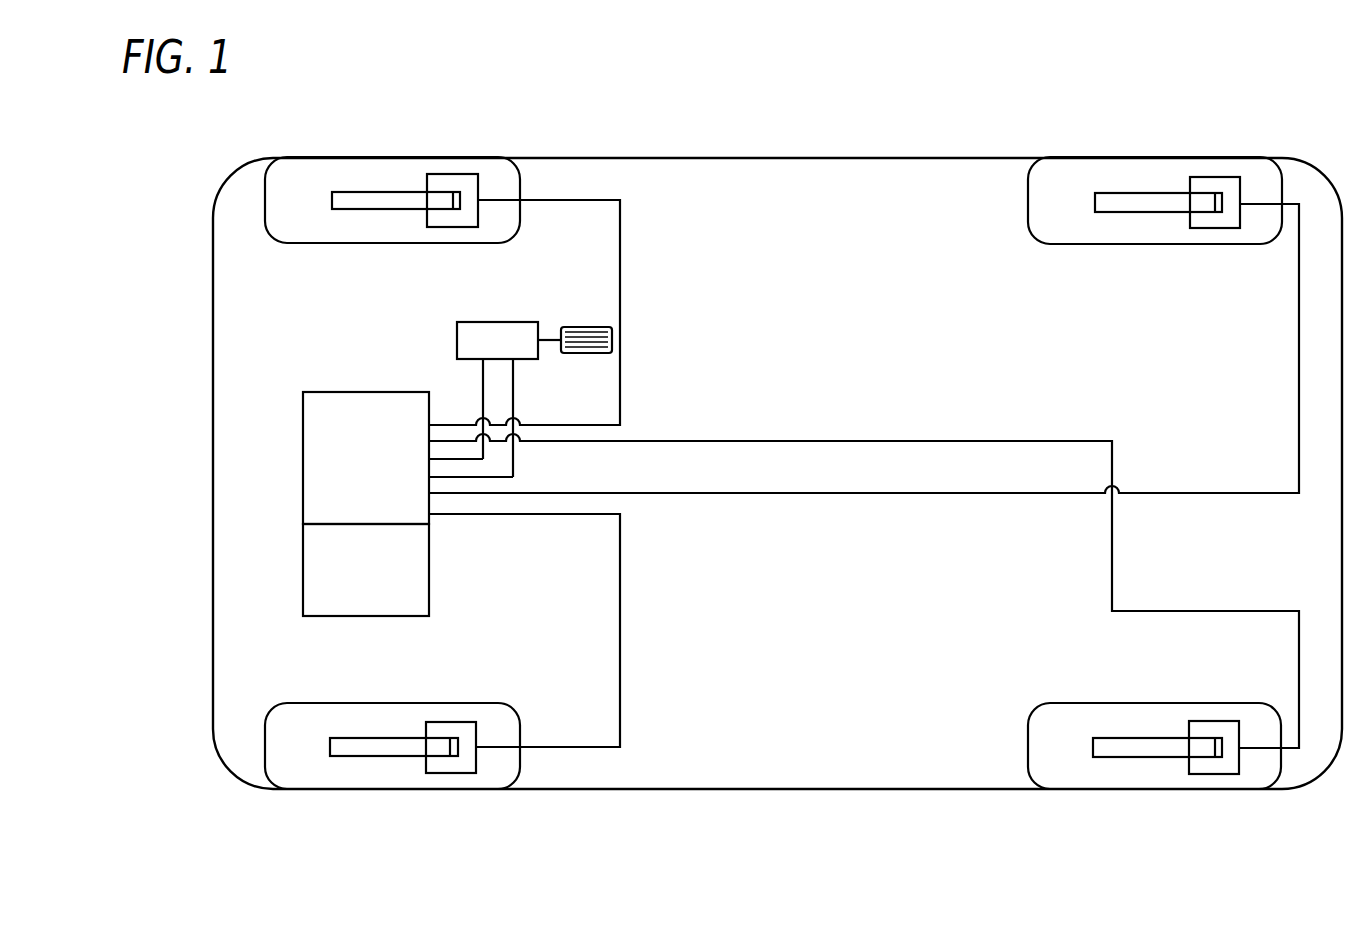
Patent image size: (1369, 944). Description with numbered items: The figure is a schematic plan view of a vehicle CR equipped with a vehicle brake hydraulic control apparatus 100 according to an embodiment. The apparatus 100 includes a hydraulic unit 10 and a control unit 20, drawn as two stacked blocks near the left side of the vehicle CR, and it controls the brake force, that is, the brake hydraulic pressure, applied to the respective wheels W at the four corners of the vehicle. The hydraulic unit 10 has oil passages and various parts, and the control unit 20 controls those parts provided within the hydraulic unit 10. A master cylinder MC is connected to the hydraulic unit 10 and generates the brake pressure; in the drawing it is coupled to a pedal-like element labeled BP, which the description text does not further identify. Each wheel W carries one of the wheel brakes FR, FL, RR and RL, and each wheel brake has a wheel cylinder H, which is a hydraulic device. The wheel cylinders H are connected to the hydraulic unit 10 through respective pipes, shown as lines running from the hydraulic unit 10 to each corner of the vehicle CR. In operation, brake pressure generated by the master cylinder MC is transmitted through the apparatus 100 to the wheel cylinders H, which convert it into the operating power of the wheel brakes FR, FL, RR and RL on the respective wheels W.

The vehicle brake hydraulic control apparatus 100 is at (713, 474).
The hydraulic unit 10 is at (310, 417).
The control unit 20 is at (310, 553).
The vehicle CR is at (802, 148).
The wheel W is at (400, 170).
The wheel cylinder H is at (456, 180).
The wheel brake FR is at (352, 196).
The wheel brake FL is at (352, 750).
The wheel brake RR is at (1110, 200).
The wheel brake RL is at (1108, 750).
The master cylinder MC is at (457, 343).
The brake pedal BP is at (589, 356).